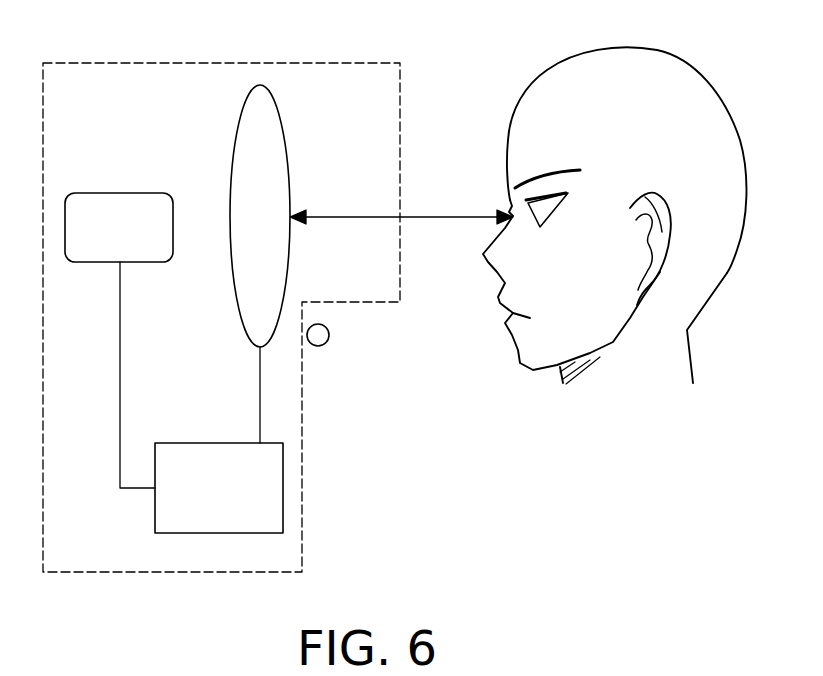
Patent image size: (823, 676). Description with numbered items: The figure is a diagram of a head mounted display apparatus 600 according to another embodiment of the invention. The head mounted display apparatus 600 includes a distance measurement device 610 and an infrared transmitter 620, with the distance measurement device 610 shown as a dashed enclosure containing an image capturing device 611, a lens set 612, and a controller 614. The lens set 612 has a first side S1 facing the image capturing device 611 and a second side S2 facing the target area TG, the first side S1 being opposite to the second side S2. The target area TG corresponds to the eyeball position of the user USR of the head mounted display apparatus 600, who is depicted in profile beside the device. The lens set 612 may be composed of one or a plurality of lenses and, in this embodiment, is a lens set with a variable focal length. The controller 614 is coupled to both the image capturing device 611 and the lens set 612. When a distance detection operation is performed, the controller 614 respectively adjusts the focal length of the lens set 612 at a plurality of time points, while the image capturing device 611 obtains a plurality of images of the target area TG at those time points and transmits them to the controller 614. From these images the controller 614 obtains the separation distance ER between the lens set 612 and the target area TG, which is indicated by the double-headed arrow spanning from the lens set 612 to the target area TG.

The head mounted display apparatus 600 is at (655, 498).
The distance measurement device 610 is at (98, 63).
The image capturing device 611 is at (120, 193).
The lens set 612 is at (260, 85).
The controller 614 is at (218, 443).
The infrared transmitter 620 is at (330, 340).
The first side S1 is at (235, 147).
The second side S2 is at (287, 147).
The separation distance ER is at (401, 202).
The target area TG is at (508, 209).
The user USR is at (705, 83).